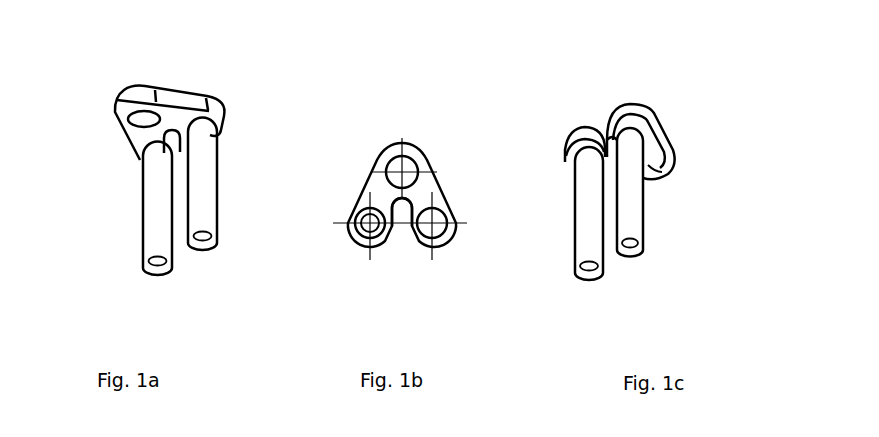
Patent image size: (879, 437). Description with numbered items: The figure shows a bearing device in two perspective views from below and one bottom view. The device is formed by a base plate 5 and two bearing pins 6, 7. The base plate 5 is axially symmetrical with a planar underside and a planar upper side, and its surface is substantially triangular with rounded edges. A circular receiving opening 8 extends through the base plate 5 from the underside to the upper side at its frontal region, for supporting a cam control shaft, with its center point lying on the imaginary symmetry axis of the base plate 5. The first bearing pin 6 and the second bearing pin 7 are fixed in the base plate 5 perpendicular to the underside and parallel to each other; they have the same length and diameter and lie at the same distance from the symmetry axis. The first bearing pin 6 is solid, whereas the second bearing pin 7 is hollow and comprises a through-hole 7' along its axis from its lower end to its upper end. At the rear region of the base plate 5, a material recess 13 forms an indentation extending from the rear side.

In FIG. 1A, the base plate 5 is at (168, 88).
In FIG. 1B, the base plate 5 is at (372, 172).
In FIG. 1C, the base plate 5 is at (642, 107).
In FIG. 1A, the first bearing pin 6 is at (217, 168).
In FIG. 1B, the first bearing pin 6 is at (448, 213).
In FIG. 1C, the first bearing pin 6 is at (570, 223).
In FIG. 1A, the second bearing pin 7 is at (115, 209).
In FIG. 1B, the second bearing pin 7 is at (343, 243).
In FIG. 1C, the second bearing pin 7 is at (675, 209).
In FIG. 1A, the through-hole 7' is at (174, 300).
In FIG. 1B, the through-hole 7' is at (351, 271).
In FIG. 1C, the through-hole 7' is at (647, 284).
In FIG. 1A, the receiving opening 8 is at (120, 102).
In FIG. 1B, the receiving opening 8 is at (403, 150).
In FIG. 1C, the receiving opening 8 is at (672, 167).
In FIG. 1B, the material recess 13 is at (401, 228).
In FIG. 1C, the material recess 13 is at (598, 120).